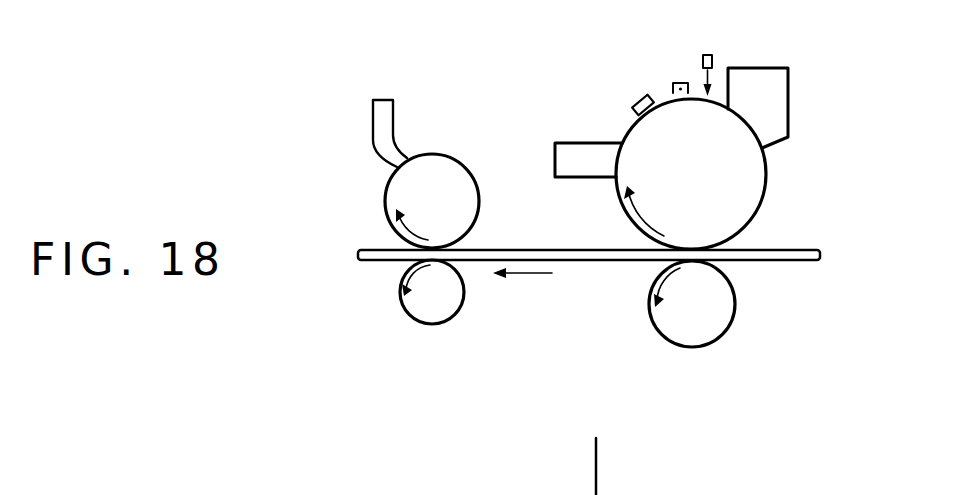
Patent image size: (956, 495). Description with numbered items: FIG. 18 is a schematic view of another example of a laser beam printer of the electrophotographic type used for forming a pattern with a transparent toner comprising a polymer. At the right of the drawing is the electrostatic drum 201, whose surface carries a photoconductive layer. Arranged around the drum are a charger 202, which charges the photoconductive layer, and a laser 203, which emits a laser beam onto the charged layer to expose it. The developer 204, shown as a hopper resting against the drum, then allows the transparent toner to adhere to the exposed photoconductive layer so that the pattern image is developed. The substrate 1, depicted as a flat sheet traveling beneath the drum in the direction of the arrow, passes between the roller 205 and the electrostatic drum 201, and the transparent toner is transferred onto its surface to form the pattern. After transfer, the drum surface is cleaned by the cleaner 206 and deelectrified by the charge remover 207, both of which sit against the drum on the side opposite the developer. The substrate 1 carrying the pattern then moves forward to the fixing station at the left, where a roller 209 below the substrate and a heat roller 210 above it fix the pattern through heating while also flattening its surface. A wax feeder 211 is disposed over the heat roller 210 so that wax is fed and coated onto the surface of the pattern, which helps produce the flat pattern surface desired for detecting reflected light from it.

The substrate 1 is at (607, 256).
The electrostatic drum 201 is at (749, 194).
The charger 202 is at (680, 83).
The laser 203 is at (710, 53).
The developer 204 is at (782, 91).
The roller 205 is at (730, 311).
The cleaner 206 is at (580, 147).
The charge remover 207 is at (641, 97).
The roller 209 is at (454, 303).
The heat roller 210 is at (387, 203).
The wax feeder 211 is at (388, 100).